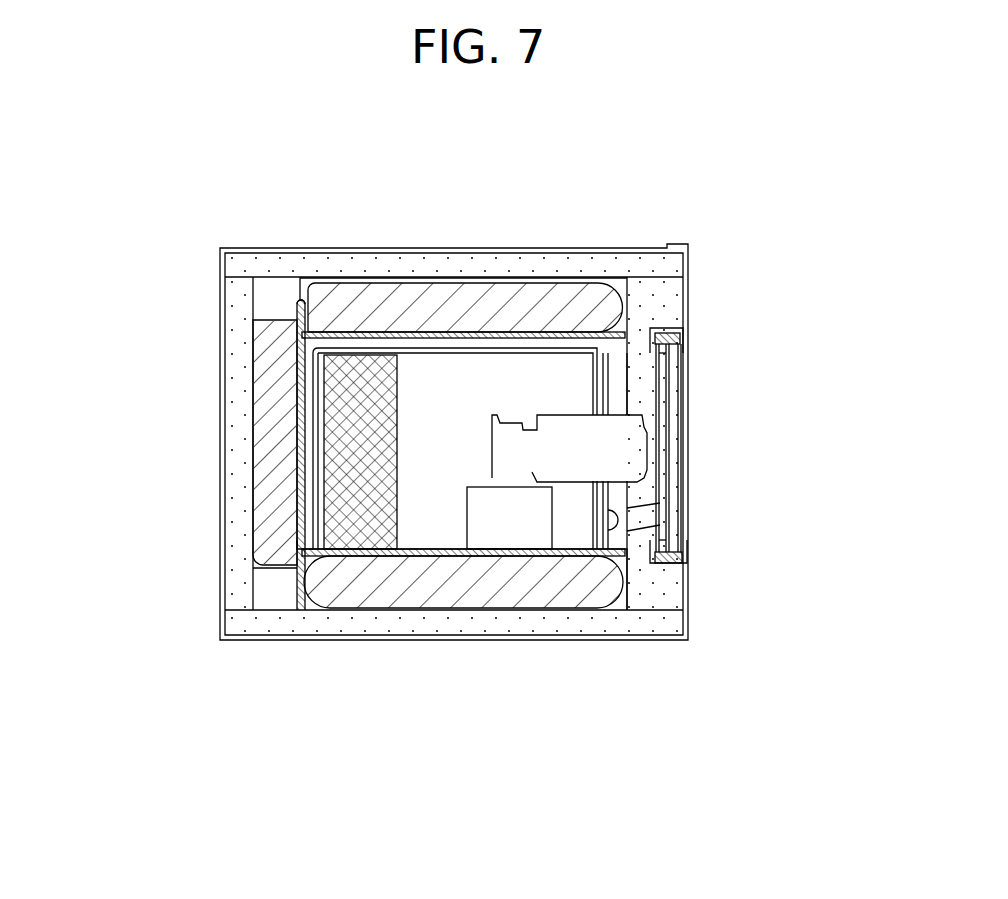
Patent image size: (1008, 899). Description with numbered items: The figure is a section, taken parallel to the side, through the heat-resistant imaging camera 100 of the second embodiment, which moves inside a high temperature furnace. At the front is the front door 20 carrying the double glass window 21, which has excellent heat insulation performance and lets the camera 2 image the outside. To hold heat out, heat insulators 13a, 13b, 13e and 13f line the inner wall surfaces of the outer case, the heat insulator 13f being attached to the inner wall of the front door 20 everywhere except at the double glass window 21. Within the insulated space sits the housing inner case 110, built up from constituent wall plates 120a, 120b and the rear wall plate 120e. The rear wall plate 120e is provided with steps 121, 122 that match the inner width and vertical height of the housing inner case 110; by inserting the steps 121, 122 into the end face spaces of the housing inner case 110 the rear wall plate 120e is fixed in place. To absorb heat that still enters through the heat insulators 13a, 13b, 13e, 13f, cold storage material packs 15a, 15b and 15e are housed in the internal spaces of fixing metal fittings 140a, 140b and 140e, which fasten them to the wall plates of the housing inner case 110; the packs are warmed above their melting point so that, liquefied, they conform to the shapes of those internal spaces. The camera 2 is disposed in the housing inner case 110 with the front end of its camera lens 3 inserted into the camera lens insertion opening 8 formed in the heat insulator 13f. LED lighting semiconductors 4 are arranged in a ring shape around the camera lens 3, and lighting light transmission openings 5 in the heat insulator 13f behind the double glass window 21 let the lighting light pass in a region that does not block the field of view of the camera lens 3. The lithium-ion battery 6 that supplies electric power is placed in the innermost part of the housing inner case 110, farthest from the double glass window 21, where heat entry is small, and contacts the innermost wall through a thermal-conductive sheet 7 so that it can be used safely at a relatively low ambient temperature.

The heat-resistant imaging camera 100 is at (497, 401).
The heat insulator 13a is at (454, 216).
The heat insulator 13b is at (454, 683).
The heat insulator 13e is at (169, 443).
The heat insulator 13f is at (752, 479).
The cold storage material pack 15a is at (465, 247).
The cold storage material pack 15b is at (463, 659).
The cold storage material pack 15e is at (196, 458).
The fixing metal fitting 140a is at (463, 231).
The fixing metal fitting 140b is at (466, 656).
The fixing metal fitting 140e is at (187, 444).
The constituent wall plate 120a is at (488, 248).
The constituent wall plate 120b is at (505, 644).
The rear wall plate 120e is at (172, 455).
The step 121 is at (176, 316).
The step 122 is at (193, 621).
The housing inner case 110 is at (730, 399).
The front door 20 is at (748, 481).
The double glass window 21 is at (773, 446).
The LED lighting semiconductor 4 is at (739, 376).
The lighting light transmission opening 5 is at (735, 384).
The camera lens 3 is at (640, 464).
The camera 2 is at (414, 611).
The lithium-ion battery 6 is at (299, 560).
The thermal-conductive sheet 7 is at (359, 505).
The camera lens insertion opening 8 is at (704, 525).